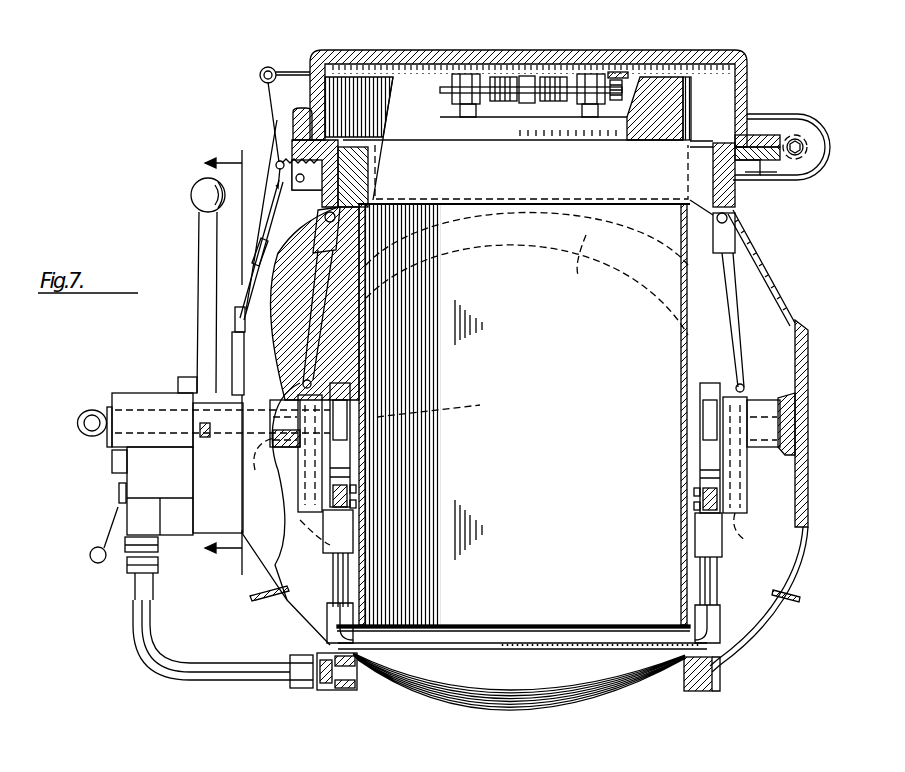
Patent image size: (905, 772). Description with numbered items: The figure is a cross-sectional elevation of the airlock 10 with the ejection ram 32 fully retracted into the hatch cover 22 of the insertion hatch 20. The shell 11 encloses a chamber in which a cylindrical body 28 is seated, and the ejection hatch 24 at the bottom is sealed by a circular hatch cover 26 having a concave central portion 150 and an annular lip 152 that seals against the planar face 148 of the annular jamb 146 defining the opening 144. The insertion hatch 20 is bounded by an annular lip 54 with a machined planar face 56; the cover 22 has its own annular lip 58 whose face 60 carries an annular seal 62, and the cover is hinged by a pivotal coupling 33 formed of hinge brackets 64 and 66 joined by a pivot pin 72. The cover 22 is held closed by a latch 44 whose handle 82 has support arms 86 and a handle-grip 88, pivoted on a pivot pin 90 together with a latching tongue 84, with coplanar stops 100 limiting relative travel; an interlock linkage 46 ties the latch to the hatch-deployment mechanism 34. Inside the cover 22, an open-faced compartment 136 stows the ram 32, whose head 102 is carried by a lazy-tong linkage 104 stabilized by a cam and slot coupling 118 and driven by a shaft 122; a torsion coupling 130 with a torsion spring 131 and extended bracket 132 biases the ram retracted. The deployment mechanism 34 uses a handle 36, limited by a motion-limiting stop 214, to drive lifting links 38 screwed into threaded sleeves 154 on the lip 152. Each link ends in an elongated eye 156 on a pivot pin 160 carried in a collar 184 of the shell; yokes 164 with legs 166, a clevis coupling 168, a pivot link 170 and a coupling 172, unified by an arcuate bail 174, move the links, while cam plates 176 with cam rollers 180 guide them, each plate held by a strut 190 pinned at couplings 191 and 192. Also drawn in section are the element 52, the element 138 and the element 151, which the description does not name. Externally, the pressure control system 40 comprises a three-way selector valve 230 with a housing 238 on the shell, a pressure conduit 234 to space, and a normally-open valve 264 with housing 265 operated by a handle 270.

The airlock 10 is at (122, 171).
The shell 11 is at (772, 262).
The insertion hatch 20 is at (360, 142).
The hatch cover 22 is at (722, 56).
The ejection hatch 24 is at (652, 688).
The hatch cover 26 is at (518, 641).
The cylindrical body 28 is at (666, 289).
The ejection ram 32 is at (587, 74).
The pivotal coupling 33 is at (826, 132).
The hatch-deployment mechanism 34 is at (174, 388).
The handle 36 is at (200, 312).
The lifting links 38 is at (335, 570).
The pressure control system 40 is at (108, 462).
The latch 44 is at (258, 70).
The interlock linkage 46 is at (252, 246).
The support bar 52 is at (802, 600).
The annular lip 54 is at (770, 160).
The planar face 56 is at (720, 140).
The annular lip 58 is at (760, 135).
The face 60 is at (792, 170).
The annular seal 62 is at (757, 137).
The hinge brackets 64 is at (748, 175).
The hinge brackets 66 is at (798, 120).
The pivot pin 72 is at (802, 150).
The handle 82 is at (286, 66).
The latching tongue 84 is at (290, 122).
The support arms 86 is at (268, 101).
The handle-grip 88 is at (265, 67).
The pivot pin 90 is at (304, 178).
The stops 100 is at (318, 241).
The head 102 is at (512, 182).
The lazy-tong linkage 104 is at (468, 74).
The cam and slot coupling 118 is at (617, 72).
The shaft 122 is at (377, 80).
The torsion coupling 130 is at (530, 110).
The torsion spring 131 is at (493, 110).
The extended bracket 132 is at (528, 77).
The open-faced compartment 136 is at (693, 100).
The insulation 138 is at (420, 406).
The opening 144 is at (680, 684).
The annular jamb 146 is at (722, 682).
The planar face 148 is at (724, 656).
The concave central portion 150 is at (488, 700).
The pipe fitting 151 is at (422, 692).
The annular lip 152 is at (455, 641).
The internally threaded sleeves 154 is at (330, 613).
The elongated eye 156 is at (348, 427).
The pivot pins 160 is at (275, 442).
The yokes 164 is at (346, 409).
The legs 166 is at (350, 477).
The clevis coupling 168 is at (356, 489).
The pivot link 170 is at (326, 507).
The coupling 172 is at (356, 504).
The arcuate bail 174 is at (527, 326).
The cam plates 176 is at (298, 493).
The cam roller 180 is at (305, 519).
The collars 184 is at (285, 405).
The strut 190 is at (306, 318).
The coupling 191 is at (302, 381).
The coupling 192 is at (268, 228).
The motion-limiting stop 214 is at (208, 437).
The three-way selector valve 230 is at (110, 393).
The pressure conduit 234 is at (178, 672).
The housing 238 is at (180, 486).
The normally-open valve 264 is at (116, 498).
The housing 265 is at (165, 525).
The handle 270 is at (93, 563).